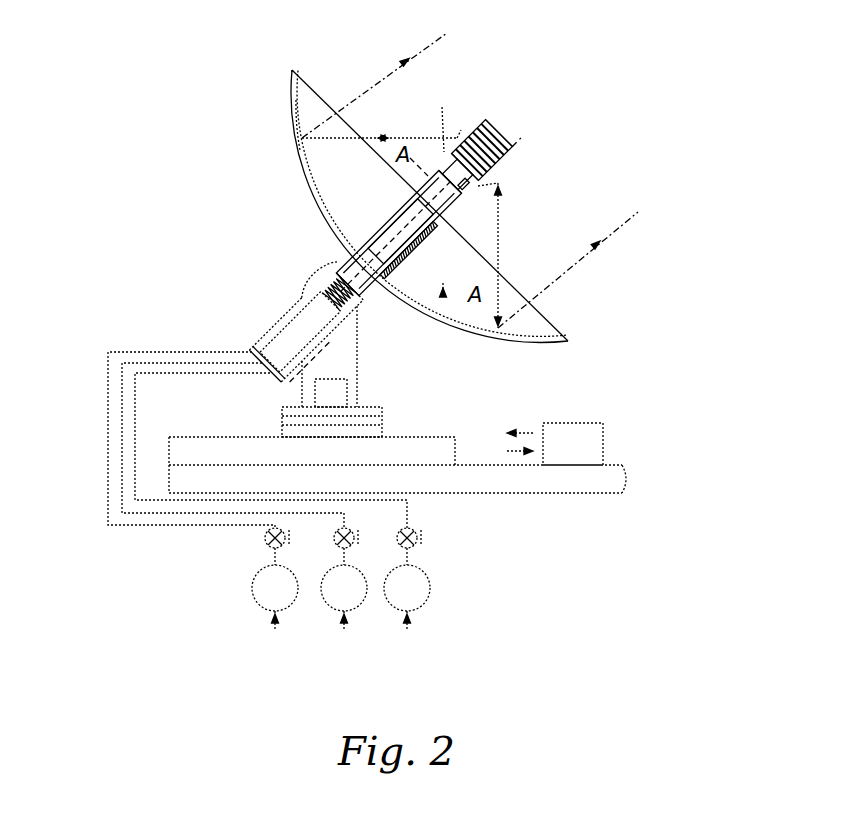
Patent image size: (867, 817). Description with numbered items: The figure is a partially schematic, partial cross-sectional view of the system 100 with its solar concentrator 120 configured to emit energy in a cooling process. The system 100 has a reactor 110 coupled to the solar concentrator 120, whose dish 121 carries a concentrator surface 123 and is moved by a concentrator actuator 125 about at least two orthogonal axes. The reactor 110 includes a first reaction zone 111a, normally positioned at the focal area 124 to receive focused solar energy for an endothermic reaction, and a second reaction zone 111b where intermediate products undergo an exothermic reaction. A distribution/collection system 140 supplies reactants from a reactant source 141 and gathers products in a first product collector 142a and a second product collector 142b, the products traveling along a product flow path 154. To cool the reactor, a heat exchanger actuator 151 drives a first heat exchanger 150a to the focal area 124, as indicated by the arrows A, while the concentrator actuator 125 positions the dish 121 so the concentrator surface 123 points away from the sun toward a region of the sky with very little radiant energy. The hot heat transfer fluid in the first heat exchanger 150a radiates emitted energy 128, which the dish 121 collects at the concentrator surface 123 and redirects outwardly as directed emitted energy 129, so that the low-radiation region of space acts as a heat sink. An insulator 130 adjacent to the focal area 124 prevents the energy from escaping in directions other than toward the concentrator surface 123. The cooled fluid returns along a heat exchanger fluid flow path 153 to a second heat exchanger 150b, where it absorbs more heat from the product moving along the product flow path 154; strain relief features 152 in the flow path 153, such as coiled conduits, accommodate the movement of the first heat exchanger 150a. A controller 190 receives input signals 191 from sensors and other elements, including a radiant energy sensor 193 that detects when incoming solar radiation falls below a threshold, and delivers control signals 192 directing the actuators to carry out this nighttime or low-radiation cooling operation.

The system 100 is at (150, 176).
The reactor 110 is at (450, 312).
The first reaction zone 111a is at (528, 172).
The second reaction zone 111b is at (432, 238).
The solar concentrator 120 is at (266, 278).
The dish 121 is at (290, 84).
The concentrator surface 123 is at (308, 102).
The focal area 124 is at (522, 160).
The concentrator actuator 125 is at (362, 390).
The emitted energy 128 is at (381, 137).
The directed emitted energy 129 is at (447, 33).
The insulator 130 is at (513, 132).
The distribution/collection system 140 is at (334, 526).
The reactant source 141 is at (278, 632).
The first product collector 142a is at (347, 632).
The second product collector 142b is at (410, 632).
The first heat exchanger 150a is at (484, 126).
The second heat exchanger 150b is at (338, 262).
The heat exchanger actuator 151 is at (490, 190).
The strain relief feature 152 is at (410, 192).
The heat exchanger fluid flow path 153 is at (372, 296).
The product flow path 154 is at (303, 292).
The controller 190 is at (603, 436).
The input signals 191 is at (512, 453).
The control signals 192 is at (524, 430).
The radiant energy sensor 193 is at (447, 118).